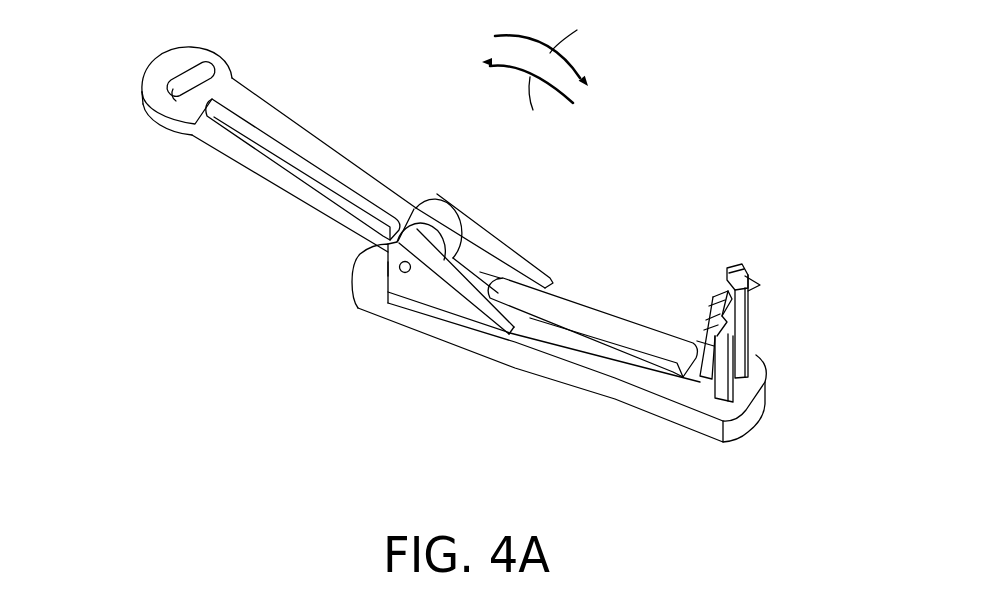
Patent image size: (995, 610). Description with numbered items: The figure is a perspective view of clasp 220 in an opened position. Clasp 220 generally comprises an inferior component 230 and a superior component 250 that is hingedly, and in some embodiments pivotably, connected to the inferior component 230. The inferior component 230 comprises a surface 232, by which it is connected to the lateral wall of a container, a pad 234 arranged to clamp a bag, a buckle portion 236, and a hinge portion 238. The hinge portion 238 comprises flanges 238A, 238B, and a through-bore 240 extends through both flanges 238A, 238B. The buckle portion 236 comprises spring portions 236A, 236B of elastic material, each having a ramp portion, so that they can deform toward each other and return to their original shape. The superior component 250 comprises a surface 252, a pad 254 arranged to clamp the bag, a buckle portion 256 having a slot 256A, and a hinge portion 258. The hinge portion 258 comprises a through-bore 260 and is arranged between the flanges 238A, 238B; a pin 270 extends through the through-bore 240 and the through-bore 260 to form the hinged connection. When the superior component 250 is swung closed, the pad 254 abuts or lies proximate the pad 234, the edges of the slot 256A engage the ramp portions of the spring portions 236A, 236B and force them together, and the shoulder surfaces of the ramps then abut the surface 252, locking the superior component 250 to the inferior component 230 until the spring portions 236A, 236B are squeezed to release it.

The clasp 220 is at (718, 85).
The inferior component 230 is at (610, 393).
The surface 232 is at (547, 380).
The pad 234 is at (597, 312).
The buckle portion 236 is at (770, 346).
The spring portion 236A is at (698, 378).
The spring portion 236B is at (757, 283).
The hinge portion 238 is at (448, 188).
The flange 238A is at (437, 287).
The flange 238B is at (483, 230).
The through-bore 240 is at (352, 297).
The superior component 250 is at (235, 77).
The surface 252 is at (237, 163).
The pad 254 is at (293, 137).
The buckle portion 256 is at (165, 48).
The slot 256A is at (170, 90).
The hinge portion 258 is at (421, 190).
The through-bore 260 is at (372, 272).
The pin 270 is at (398, 266).